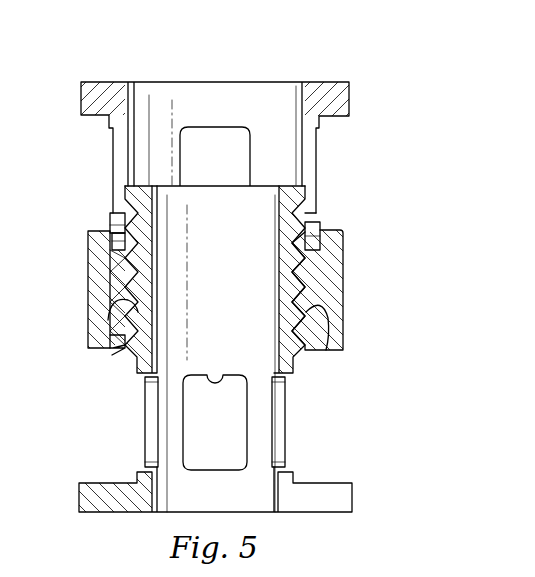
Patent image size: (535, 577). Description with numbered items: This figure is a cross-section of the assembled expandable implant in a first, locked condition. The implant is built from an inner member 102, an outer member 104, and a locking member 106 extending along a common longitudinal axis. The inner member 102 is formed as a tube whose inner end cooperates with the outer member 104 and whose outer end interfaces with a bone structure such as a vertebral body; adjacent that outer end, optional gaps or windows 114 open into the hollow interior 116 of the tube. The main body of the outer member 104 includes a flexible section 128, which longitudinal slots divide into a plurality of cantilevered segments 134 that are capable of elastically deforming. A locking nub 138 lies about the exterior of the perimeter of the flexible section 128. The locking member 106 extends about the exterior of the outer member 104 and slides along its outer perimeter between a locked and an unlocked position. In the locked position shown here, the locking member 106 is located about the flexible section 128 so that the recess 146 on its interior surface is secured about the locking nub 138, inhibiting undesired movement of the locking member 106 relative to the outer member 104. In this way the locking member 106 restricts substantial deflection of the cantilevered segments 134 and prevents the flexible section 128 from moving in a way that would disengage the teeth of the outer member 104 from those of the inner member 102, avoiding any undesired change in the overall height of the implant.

The inner member 102 is at (70, 505).
The outer member 104 is at (231, 78).
The locking member 106 is at (348, 243).
The windows 114 is at (223, 378).
The hollow interior 116 is at (232, 260).
The flexible section 128 is at (72, 232).
The cantilevered segments 134 is at (117, 350).
The locking nub 138 is at (327, 298).
The recess 146 is at (130, 297).